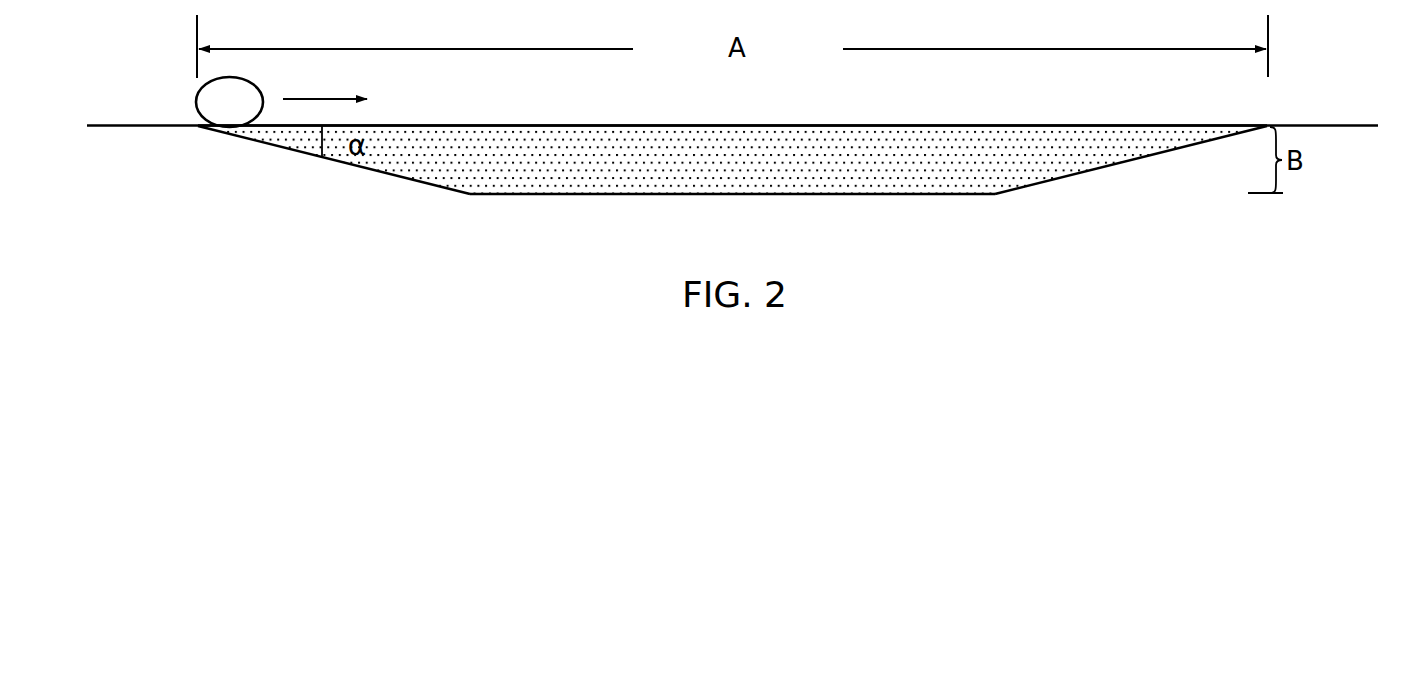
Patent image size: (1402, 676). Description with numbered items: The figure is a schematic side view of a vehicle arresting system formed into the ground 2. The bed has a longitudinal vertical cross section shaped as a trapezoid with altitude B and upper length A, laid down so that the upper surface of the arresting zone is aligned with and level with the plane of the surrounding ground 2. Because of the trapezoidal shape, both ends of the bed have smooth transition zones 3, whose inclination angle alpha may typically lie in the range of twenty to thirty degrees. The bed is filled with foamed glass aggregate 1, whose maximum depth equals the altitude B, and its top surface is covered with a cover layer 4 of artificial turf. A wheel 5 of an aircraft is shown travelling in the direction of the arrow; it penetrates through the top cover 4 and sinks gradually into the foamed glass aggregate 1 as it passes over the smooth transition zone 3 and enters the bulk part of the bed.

The foamed glass aggregate 1 is at (732, 160).
The ground 2 is at (797, 195).
The transition zones 3 is at (337, 164).
The cover layer 4 is at (1058, 125).
The wheel 5 is at (229, 102).